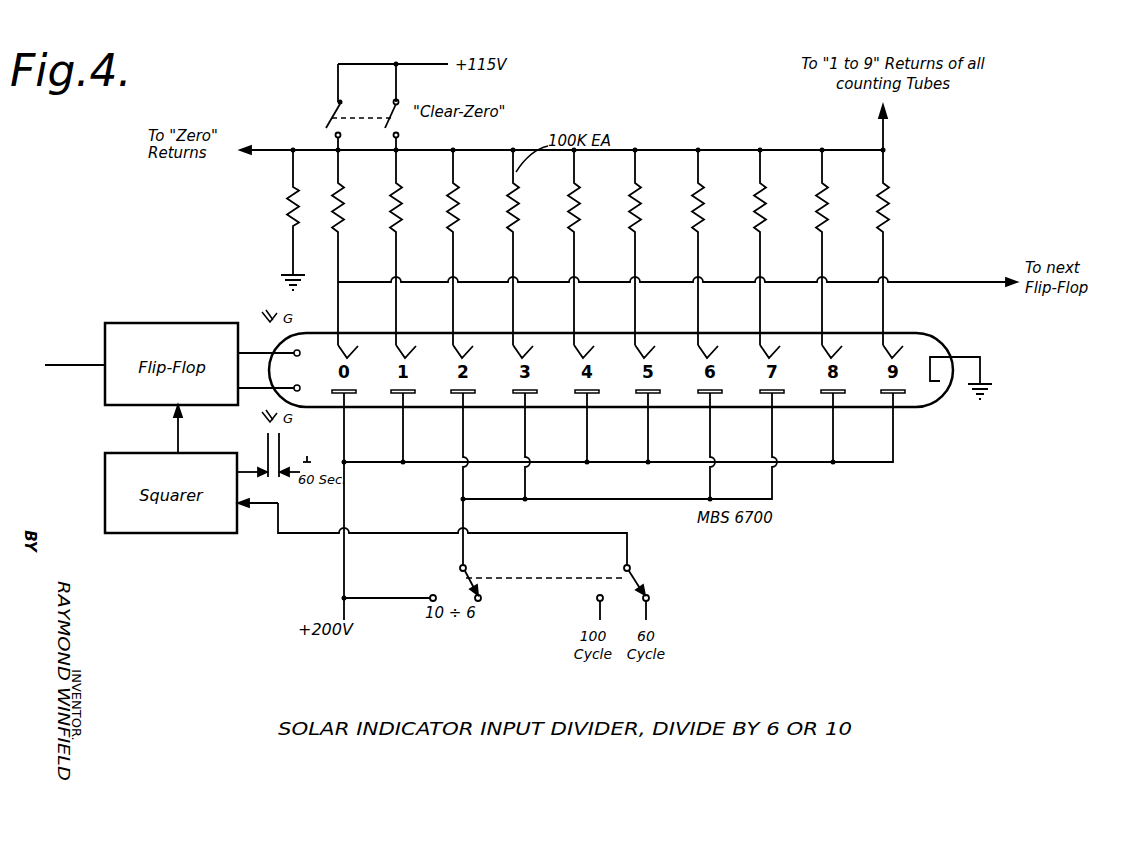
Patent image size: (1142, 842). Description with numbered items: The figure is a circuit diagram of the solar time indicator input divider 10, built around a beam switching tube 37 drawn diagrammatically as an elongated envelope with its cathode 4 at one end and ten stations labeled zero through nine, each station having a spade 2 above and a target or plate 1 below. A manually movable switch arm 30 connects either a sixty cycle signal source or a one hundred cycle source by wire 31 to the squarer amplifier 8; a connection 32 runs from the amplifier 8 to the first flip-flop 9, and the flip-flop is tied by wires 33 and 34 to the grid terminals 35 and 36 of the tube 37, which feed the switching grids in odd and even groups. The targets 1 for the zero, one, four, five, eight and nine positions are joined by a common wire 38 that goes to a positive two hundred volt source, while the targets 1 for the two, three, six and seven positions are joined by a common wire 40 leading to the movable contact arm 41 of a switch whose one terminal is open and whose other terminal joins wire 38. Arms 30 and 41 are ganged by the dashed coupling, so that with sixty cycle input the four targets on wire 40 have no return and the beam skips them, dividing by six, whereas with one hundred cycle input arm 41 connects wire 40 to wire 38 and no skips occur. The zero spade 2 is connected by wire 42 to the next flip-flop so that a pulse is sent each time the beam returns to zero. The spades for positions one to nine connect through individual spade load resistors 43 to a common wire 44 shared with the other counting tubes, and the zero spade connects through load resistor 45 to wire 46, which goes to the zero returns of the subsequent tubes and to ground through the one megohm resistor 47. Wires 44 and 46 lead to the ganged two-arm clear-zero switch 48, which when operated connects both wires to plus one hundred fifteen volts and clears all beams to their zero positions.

The targets or plates 1 is at (349, 396).
The spades 2 is at (347, 354).
The cathode 4 is at (942, 357).
The squarer amplifier 8 is at (188, 530).
The first flip-flop 9 is at (156, 324).
The divider 10 is at (730, 142).
The movable switch arm 30 is at (643, 586).
The wire 31 is at (592, 536).
The connection 32 is at (177, 437).
The wire 33 is at (252, 350).
The wire 34 is at (254, 393).
The grid terminal 35 is at (300, 354).
The grid terminal 36 is at (300, 389).
The beam switching tube 37 is at (690, 412).
The common wire 38 is at (346, 506).
The common wire 40 is at (465, 448).
The movable contact arm 41 is at (459, 576).
The wire 42 is at (921, 281).
The spade load resistors 43 is at (830, 198).
The common wire 44 is at (680, 150).
The load resistor 45 is at (337, 200).
The wire 46 is at (302, 148).
The 1 megohm resistor 47 is at (288, 198).
The switch 48 is at (359, 117).